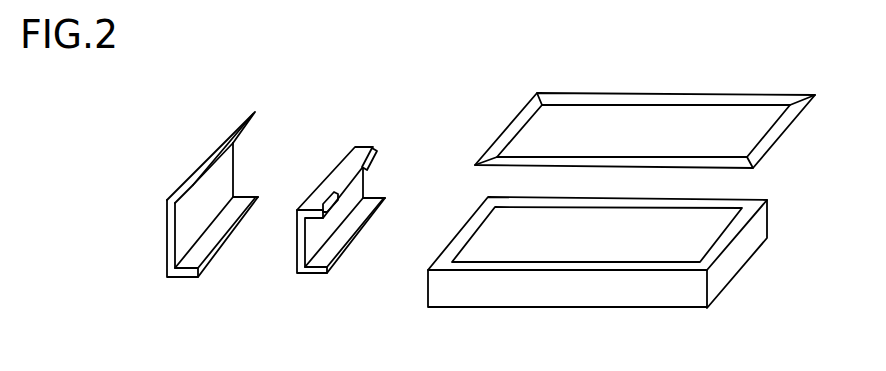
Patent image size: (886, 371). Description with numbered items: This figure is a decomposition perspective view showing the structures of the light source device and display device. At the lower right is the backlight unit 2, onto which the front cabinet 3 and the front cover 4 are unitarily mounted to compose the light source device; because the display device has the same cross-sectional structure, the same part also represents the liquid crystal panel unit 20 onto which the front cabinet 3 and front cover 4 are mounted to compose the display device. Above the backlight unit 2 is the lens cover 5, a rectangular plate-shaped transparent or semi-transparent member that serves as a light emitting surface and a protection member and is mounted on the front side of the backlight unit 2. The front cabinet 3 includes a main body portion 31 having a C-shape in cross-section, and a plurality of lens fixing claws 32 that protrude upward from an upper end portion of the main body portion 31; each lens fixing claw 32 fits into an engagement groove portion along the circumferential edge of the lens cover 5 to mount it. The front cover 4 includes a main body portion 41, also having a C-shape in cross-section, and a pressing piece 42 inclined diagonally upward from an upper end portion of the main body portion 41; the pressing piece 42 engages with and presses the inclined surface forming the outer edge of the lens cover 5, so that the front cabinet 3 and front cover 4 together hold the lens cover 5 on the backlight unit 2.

The backlight unit 2 is at (597, 280).
The liquid crystal panel unit 20 is at (593, 295).
The front cabinet 3 is at (315, 209).
The main body portion 31 is at (297, 272).
The lens fixing claw 32 is at (373, 148).
The front cover 4 is at (195, 213).
The main body portion 41 is at (166, 278).
The pressing piece 42 is at (218, 152).
The lens cover 5 is at (765, 149).